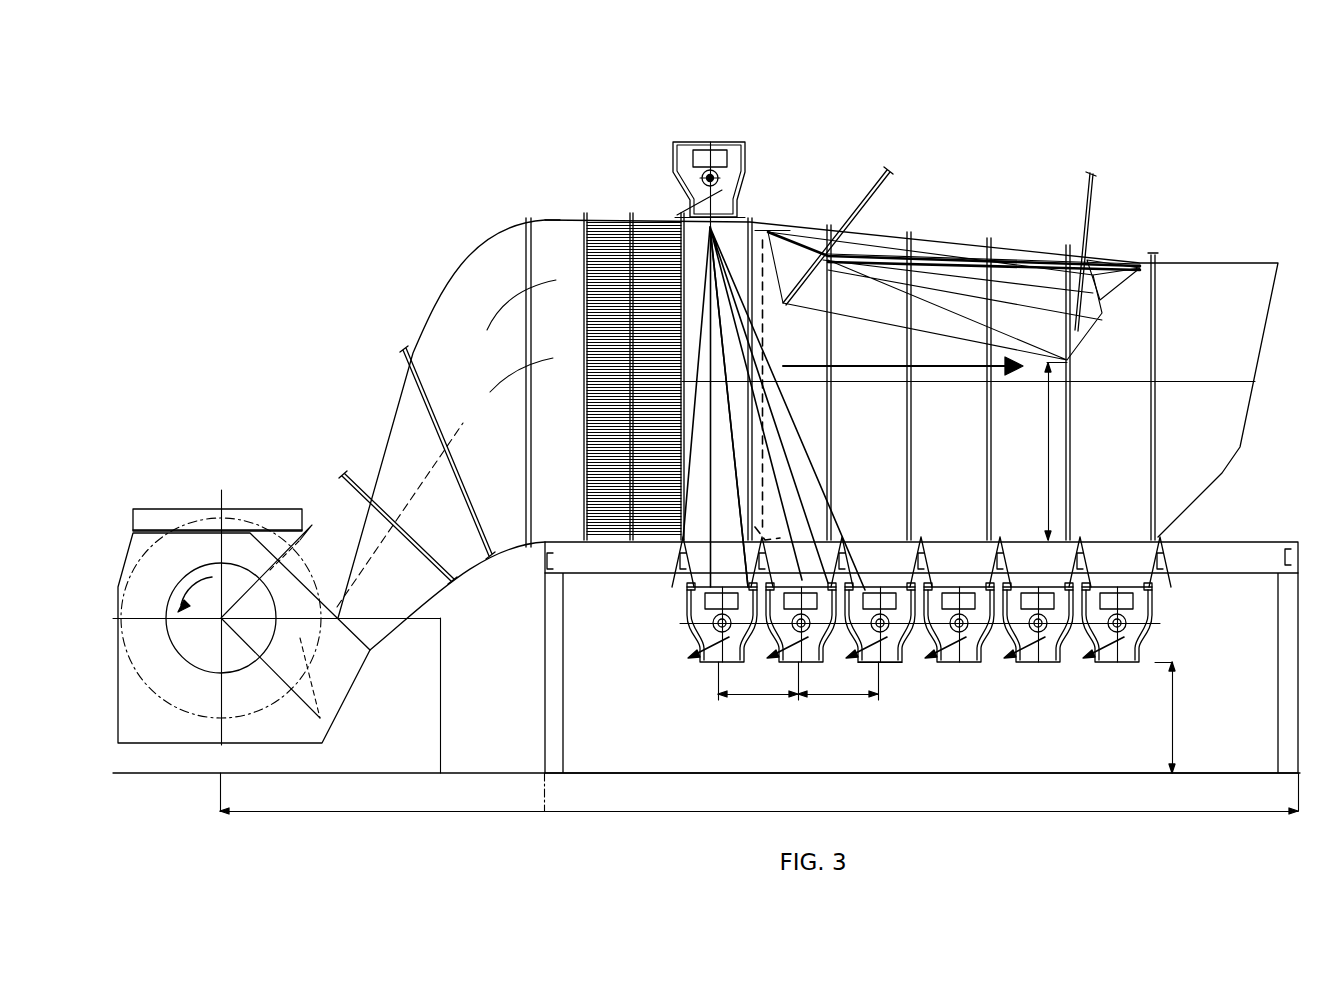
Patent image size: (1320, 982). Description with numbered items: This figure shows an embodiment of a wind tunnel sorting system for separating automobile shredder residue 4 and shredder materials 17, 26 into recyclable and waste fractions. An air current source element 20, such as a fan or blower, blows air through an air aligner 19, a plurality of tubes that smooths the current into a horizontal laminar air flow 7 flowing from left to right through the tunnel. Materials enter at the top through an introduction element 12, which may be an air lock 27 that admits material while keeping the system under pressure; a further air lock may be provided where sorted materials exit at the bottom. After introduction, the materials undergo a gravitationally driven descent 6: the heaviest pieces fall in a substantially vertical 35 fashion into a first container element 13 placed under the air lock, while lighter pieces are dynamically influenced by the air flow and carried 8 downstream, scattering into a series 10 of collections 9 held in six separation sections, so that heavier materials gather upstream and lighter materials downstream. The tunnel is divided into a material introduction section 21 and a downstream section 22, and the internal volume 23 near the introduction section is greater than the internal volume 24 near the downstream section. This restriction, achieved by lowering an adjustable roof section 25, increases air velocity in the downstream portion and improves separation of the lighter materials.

The automobile shredder residue 4 is at (709, 147).
The shredder materials 17 is at (712, 124).
The gravitationally driven descent 6 is at (711, 318).
The laminar air flow 7 is at (963, 370).
The carried materials path 8 is at (716, 290).
The collection of materials 9 is at (727, 563).
The series of collections 10 is at (1000, 690).
The introduction element 12 is at (705, 208).
The container element 13 is at (790, 670).
The air aligner 19 is at (610, 237).
The air current source element 20 is at (182, 560).
The material introduction section 21 is at (693, 298).
The downstream section 22 is at (1115, 352).
The internal volume at material introduction section 23 is at (765, 495).
The internal volume at downstream section 24 is at (1048, 467).
The roof section 25 is at (1000, 262).
The shredder materials 26 is at (947, 221).
The air lock 27 is at (890, 652).
The substantially vertical descent 35 is at (707, 290).